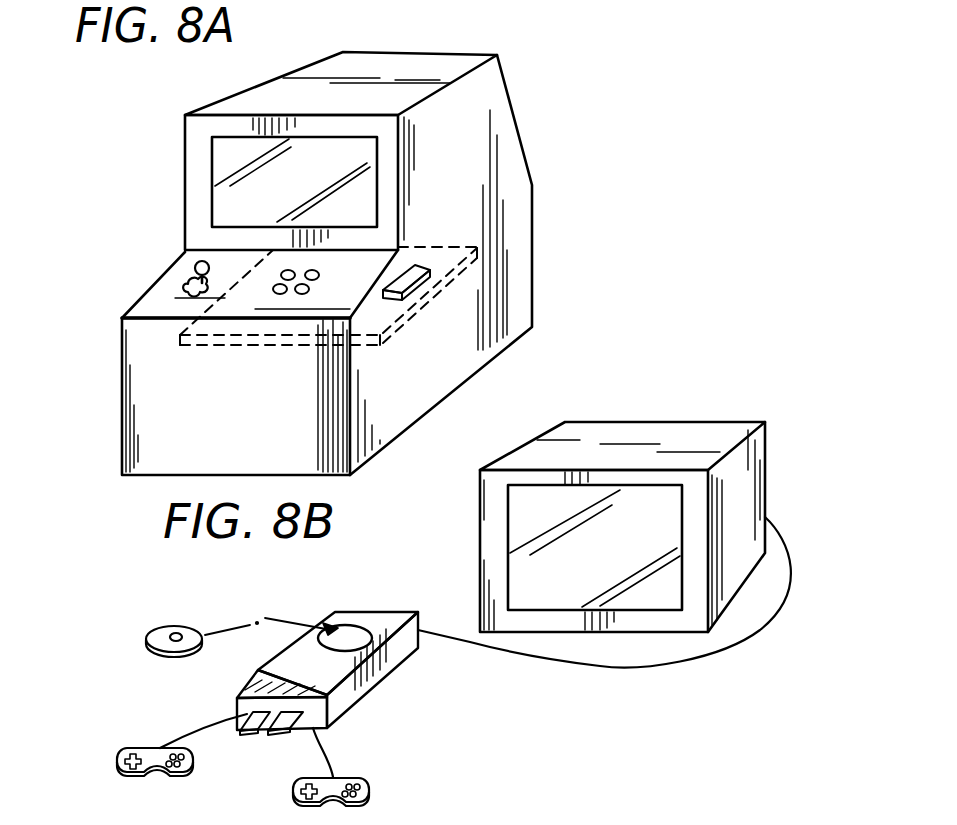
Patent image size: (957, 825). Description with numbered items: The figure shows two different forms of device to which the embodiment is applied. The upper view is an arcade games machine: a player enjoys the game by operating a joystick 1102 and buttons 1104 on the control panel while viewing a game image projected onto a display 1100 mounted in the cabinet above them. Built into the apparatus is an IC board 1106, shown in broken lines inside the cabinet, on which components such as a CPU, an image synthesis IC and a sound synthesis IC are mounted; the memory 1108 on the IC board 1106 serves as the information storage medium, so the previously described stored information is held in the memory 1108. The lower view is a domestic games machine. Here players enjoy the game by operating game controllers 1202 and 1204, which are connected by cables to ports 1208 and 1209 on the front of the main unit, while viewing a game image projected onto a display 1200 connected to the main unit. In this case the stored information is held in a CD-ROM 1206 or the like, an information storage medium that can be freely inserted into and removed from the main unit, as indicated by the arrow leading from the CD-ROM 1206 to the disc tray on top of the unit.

In FIG. 8A, the display 1100 is at (235, 163).
In FIG. 8A, the joystick 1102 is at (197, 277).
In FIG. 8A, the buttons 1104 is at (288, 294).
In FIG. 8A, the IC board 1106 is at (403, 327).
In FIG. 8A, the memory 1108 is at (413, 282).
In FIG. 8B, the display 1200 is at (542, 555).
In FIG. 8B, the game controller 1202 is at (120, 768).
In FIG. 8B, the game controller 1204 is at (368, 791).
In FIG. 8B, the CD-ROM 1206 is at (170, 629).
In FIG. 8B, the controller port 1208 is at (247, 715).
In FIG. 8B, the controller port 1209 is at (273, 737).